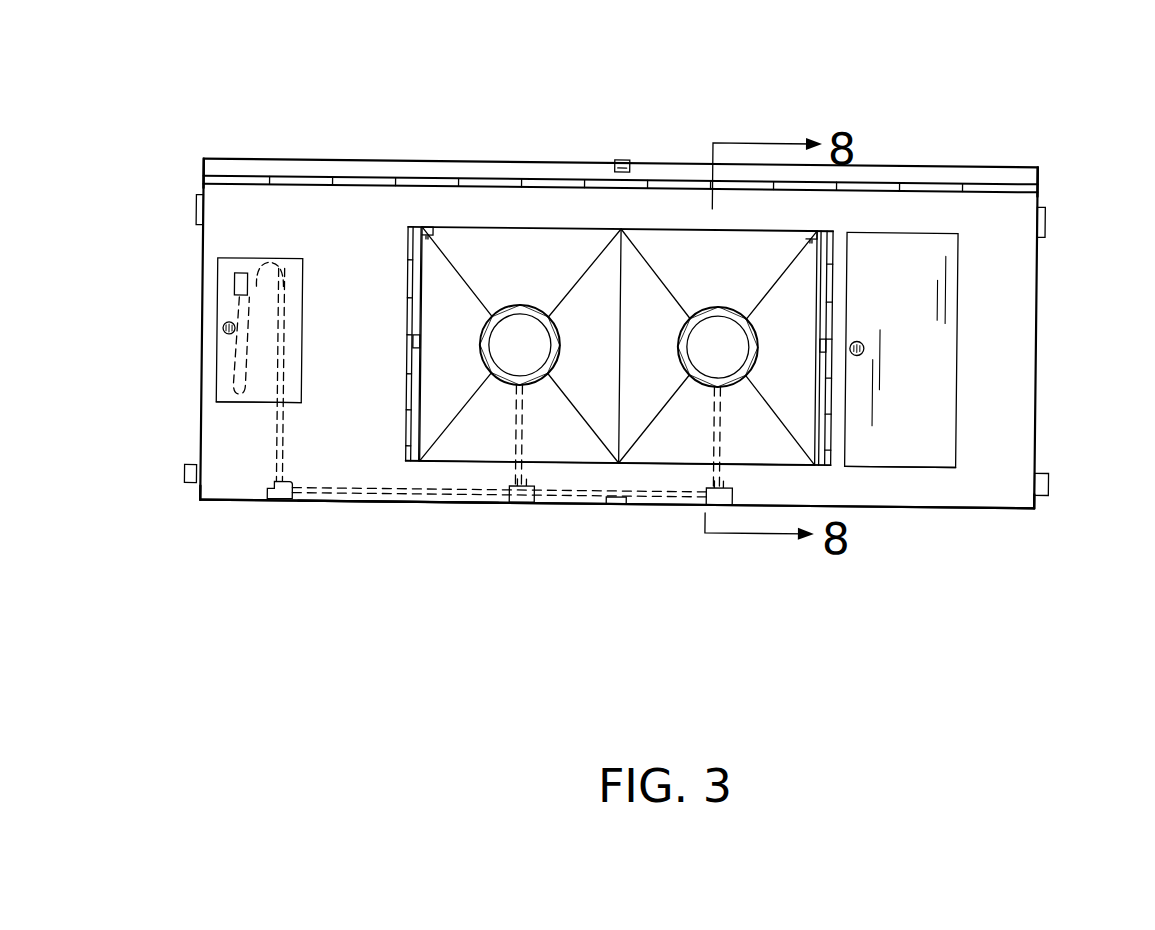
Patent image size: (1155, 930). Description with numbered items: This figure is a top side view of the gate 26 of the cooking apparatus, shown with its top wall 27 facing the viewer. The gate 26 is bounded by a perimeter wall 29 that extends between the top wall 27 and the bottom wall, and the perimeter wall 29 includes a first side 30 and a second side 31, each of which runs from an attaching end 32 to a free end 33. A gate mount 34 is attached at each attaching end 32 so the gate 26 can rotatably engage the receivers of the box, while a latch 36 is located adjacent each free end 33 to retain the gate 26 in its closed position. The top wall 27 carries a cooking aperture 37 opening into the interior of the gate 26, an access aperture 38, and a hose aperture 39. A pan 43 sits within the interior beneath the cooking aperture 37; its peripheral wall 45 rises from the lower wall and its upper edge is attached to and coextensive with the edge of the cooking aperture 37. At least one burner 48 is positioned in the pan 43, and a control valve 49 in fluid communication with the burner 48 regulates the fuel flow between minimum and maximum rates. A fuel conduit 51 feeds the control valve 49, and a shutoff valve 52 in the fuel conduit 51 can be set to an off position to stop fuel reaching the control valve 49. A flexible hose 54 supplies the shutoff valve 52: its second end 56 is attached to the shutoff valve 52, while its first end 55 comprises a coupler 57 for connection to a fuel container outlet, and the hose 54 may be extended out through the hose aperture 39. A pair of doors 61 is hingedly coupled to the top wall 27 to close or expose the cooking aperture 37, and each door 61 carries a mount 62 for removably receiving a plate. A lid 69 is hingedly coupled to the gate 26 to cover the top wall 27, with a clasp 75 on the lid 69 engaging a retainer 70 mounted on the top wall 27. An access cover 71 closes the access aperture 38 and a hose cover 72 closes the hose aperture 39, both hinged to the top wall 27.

The gate 26 is at (200, 504).
The top wall 27 is at (990, 372).
The perimeter wall 29 is at (444, 504).
The first side 30 is at (1040, 352).
The second side 31 is at (204, 342).
The attaching end 32 is at (202, 182).
The free end 33 is at (198, 500).
The gate mount 34 is at (195, 205).
The latch 36 is at (190, 469).
The cooking aperture 37 is at (540, 231).
The access aperture 38 is at (942, 252).
The hose aperture 39 is at (285, 278).
The pan 43 is at (577, 229).
The peripheral wall 45 is at (690, 288).
The burner 48 is at (500, 306).
The control valve 49 is at (536, 497).
The fuel conduit 51 is at (388, 504).
The shutoff valve 52 is at (266, 500).
The hose 54 is at (263, 278).
The first end 55 is at (234, 287).
The second end 56 is at (294, 507).
The coupler 57 is at (228, 302).
The door 61 is at (407, 270).
The mount 62 is at (426, 229).
The lid 69 is at (222, 163).
The retainer 70 is at (604, 504).
The access cover 71 is at (895, 464).
The hose cover 72 is at (249, 407).
The clasp 75 is at (617, 160).